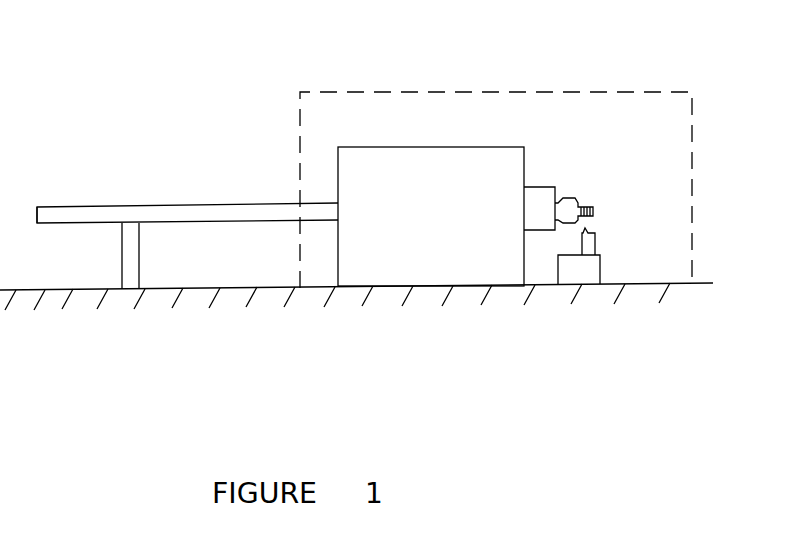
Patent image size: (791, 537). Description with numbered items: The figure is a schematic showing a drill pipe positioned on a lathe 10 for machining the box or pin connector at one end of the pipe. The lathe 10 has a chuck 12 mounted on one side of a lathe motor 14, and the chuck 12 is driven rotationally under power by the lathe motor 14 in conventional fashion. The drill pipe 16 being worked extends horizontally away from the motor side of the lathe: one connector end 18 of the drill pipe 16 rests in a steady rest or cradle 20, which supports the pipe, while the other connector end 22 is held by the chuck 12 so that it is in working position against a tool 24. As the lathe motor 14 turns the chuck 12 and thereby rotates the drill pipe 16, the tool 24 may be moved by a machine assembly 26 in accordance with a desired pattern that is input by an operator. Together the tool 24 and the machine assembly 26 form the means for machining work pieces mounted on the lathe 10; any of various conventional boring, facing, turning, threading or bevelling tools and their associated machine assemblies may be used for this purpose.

The lathe 10 is at (692, 190).
The chuck 12 is at (538, 198).
The lathe motor 14 is at (443, 147).
The drill pipe 16 is at (247, 208).
The connector end 18 is at (102, 212).
The steady rest or cradle 20 is at (140, 258).
The connector end 22 is at (572, 200).
The tool 24 is at (593, 247).
The machine assembly 26 is at (600, 267).